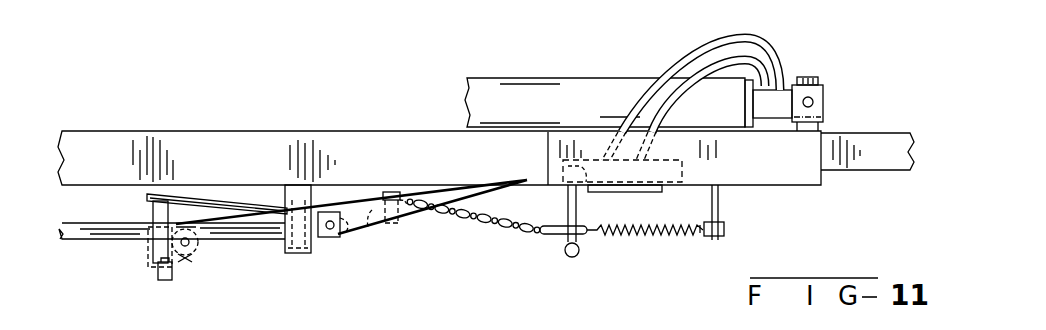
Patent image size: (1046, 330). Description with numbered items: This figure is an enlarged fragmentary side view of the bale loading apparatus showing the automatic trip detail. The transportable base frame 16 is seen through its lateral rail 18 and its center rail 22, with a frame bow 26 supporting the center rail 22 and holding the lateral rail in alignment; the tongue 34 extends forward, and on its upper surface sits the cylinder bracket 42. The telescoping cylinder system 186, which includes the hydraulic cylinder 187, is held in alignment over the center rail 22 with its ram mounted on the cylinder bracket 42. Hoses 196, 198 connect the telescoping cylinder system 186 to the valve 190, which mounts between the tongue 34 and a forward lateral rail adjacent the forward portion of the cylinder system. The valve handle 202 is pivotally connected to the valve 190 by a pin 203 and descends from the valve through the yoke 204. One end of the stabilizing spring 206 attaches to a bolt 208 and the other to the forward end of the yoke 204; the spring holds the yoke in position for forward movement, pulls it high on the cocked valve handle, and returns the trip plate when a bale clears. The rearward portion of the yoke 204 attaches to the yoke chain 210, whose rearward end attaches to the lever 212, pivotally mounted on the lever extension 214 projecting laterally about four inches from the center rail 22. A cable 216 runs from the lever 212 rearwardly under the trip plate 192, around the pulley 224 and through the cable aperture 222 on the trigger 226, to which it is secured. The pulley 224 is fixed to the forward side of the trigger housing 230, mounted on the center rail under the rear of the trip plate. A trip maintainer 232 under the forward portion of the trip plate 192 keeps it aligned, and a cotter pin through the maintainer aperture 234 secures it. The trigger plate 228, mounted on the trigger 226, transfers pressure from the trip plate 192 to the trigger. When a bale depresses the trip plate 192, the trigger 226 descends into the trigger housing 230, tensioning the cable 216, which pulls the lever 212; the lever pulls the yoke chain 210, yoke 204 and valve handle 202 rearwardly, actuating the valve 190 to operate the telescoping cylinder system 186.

The transportable base frame 16 is at (790, 197).
The lateral rail 18 is at (237, 148).
The center rail 22 is at (410, 211).
The frame bow 26 is at (297, 254).
The tongue 34 is at (867, 131).
The cylinder bracket 42 is at (814, 78).
The telescoping cylinder system 186 is at (494, 75).
The hydraulic cylinder 187 is at (533, 86).
The valve 190 is at (595, 176).
The trip plate 192 is at (197, 200).
The hose 196 is at (746, 38).
The hose 198 is at (717, 72).
The valve handle 202 is at (580, 254).
The pin 203 is at (622, 191).
The yoke 204 is at (553, 237).
The stabilizing spring 206 is at (650, 226).
The bolt 208 is at (720, 231).
The yoke chain 210 is at (522, 236).
The lever 212 is at (400, 192).
The lever extension 214 is at (372, 214).
The cable 216 is at (258, 229).
The cable aperture 222 is at (158, 278).
The pulley 224 is at (188, 258).
The trigger 226 is at (154, 218).
The trigger plate 228 is at (147, 197).
The trigger housing 230 is at (152, 247).
The trip maintainer 232 is at (326, 238).
The maintainer aperture 234 is at (342, 220).